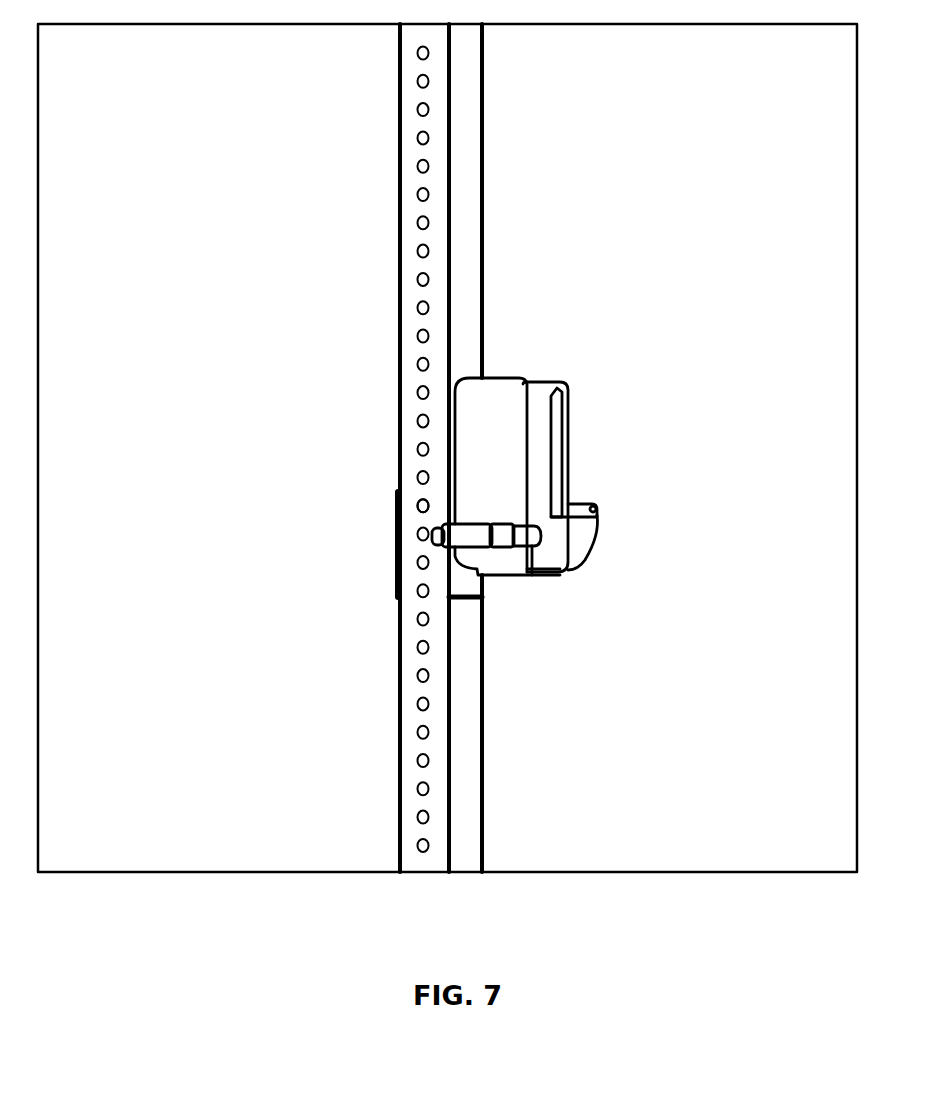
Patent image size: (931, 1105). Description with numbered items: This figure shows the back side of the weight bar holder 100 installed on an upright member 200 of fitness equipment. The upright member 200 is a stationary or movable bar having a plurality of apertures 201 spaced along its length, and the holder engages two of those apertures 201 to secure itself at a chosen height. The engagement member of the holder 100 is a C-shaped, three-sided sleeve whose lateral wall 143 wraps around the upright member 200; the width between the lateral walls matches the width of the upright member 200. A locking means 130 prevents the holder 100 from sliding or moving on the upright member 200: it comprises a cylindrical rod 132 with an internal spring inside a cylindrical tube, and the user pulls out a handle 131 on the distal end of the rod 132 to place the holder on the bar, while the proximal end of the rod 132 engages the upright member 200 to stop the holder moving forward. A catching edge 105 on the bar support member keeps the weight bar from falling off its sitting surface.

The weight bar holder 100 is at (557, 358).
The catching edge 105 is at (599, 511).
The locking means 130 is at (471, 528).
The handle 131 is at (532, 575).
The cylindrical rod 132 is at (507, 527).
The lateral wall 143 is at (470, 582).
The upright member 200 is at (467, 96).
The apertures 201 is at (417, 309).